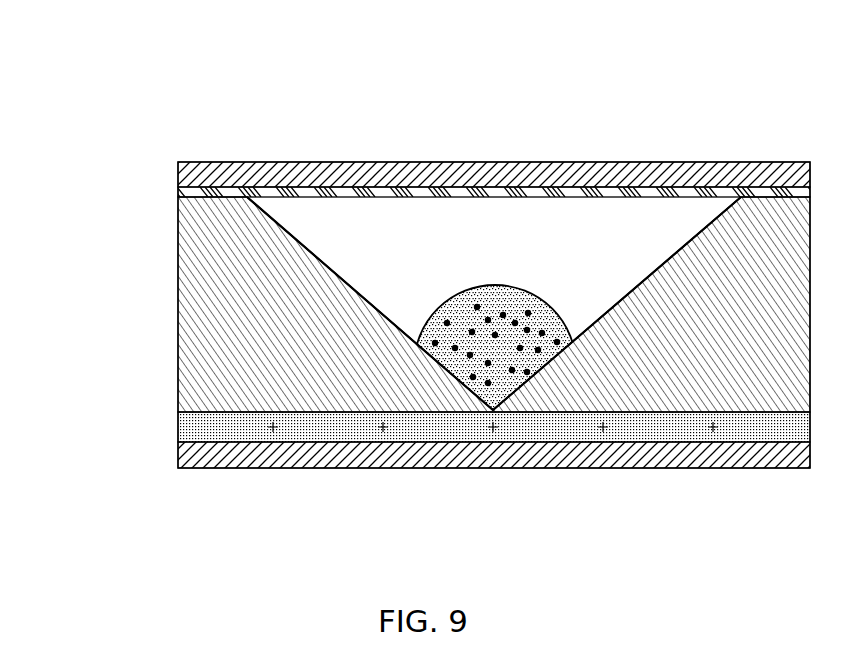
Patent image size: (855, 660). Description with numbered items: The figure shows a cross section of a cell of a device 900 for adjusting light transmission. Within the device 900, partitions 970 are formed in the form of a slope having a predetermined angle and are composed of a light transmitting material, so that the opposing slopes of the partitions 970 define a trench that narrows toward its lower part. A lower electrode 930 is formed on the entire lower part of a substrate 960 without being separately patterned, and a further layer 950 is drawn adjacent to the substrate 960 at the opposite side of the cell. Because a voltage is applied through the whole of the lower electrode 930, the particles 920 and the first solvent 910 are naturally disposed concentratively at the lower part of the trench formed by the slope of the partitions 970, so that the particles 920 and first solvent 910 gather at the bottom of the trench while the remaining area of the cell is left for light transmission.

The device for adjusting light transmission 900 is at (118, 57).
The first solvent 910 is at (447, 357).
The particles 920 is at (480, 358).
The lower electrode 930 is at (375, 242).
The reflective layer 950 is at (190, 193).
The substrate 960 is at (178, 175).
The partitions 970 is at (187, 285).